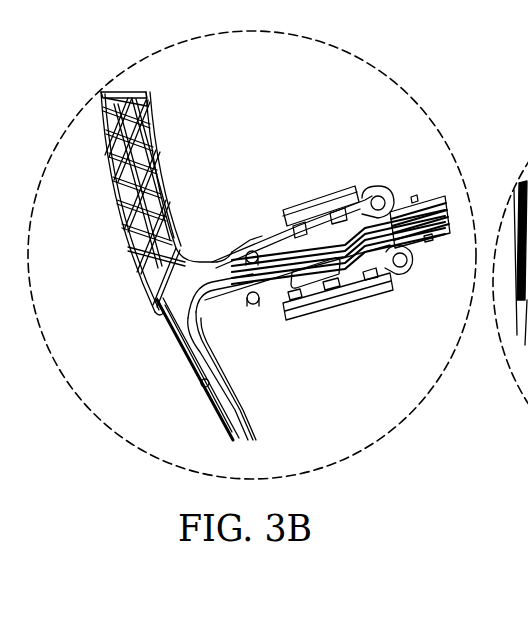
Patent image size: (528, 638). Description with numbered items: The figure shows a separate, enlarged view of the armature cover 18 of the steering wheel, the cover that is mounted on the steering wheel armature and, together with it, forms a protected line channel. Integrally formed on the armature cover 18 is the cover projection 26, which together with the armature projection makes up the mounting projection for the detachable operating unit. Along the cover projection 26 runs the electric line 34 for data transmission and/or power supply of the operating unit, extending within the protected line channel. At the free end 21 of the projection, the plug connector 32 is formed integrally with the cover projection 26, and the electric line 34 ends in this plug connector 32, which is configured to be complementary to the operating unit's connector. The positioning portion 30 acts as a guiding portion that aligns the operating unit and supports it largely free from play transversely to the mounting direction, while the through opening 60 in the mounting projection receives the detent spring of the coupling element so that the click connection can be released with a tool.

The armature cover 18 is at (135, 247).
The free end 21 is at (432, 268).
The cover projection 26 is at (262, 217).
The positioning portion 30 is at (315, 207).
The plug connector 32 is at (415, 200).
The electric line 34 is at (215, 397).
The through opening 60 is at (312, 279).